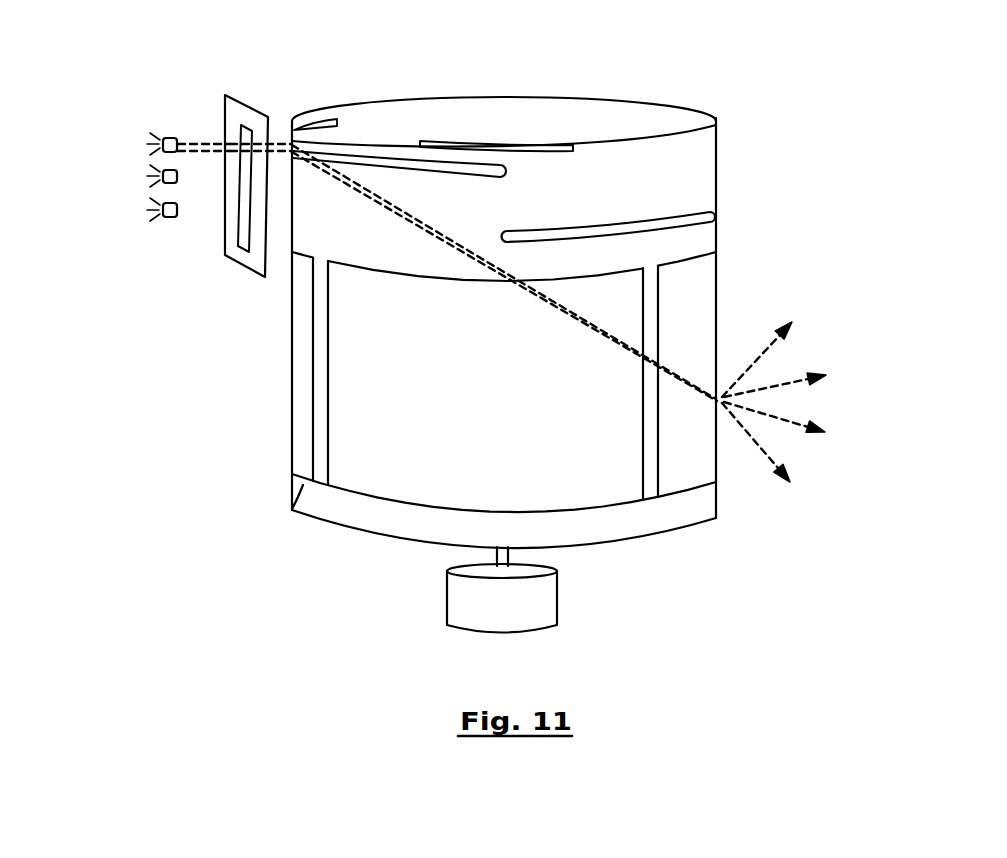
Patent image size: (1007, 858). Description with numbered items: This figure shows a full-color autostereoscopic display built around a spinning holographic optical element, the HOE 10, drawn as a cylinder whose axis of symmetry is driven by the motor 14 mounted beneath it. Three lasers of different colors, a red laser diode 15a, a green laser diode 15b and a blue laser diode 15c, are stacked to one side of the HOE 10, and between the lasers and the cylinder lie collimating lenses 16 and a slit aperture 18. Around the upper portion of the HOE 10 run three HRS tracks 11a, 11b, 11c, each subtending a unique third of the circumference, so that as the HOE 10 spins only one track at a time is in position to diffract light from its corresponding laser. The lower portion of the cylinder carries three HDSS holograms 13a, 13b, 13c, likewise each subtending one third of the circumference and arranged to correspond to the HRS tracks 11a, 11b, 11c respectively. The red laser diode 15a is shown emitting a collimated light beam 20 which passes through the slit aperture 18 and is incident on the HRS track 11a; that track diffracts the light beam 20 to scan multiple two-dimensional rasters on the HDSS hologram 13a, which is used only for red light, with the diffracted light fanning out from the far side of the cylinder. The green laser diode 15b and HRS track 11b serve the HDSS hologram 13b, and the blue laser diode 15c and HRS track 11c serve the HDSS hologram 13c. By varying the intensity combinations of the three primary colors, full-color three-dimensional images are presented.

The HOE 10 is at (717, 118).
The HRS track 11a is at (340, 150).
The HRS track 11b is at (498, 140).
The HRS track 11c is at (653, 223).
The HDSS hologram 13a is at (683, 493).
The HDSS hologram 13b is at (377, 499).
The HDSS hologram 13c is at (292, 510).
The motor 14 is at (557, 607).
The red laser diode 15a is at (167, 137).
The green laser diode 15b is at (165, 172).
The blue laser diode 15c is at (165, 207).
The collimating lenses 16 is at (176, 137).
The slit aperture 18 is at (240, 110).
The light beam 20 is at (197, 140).